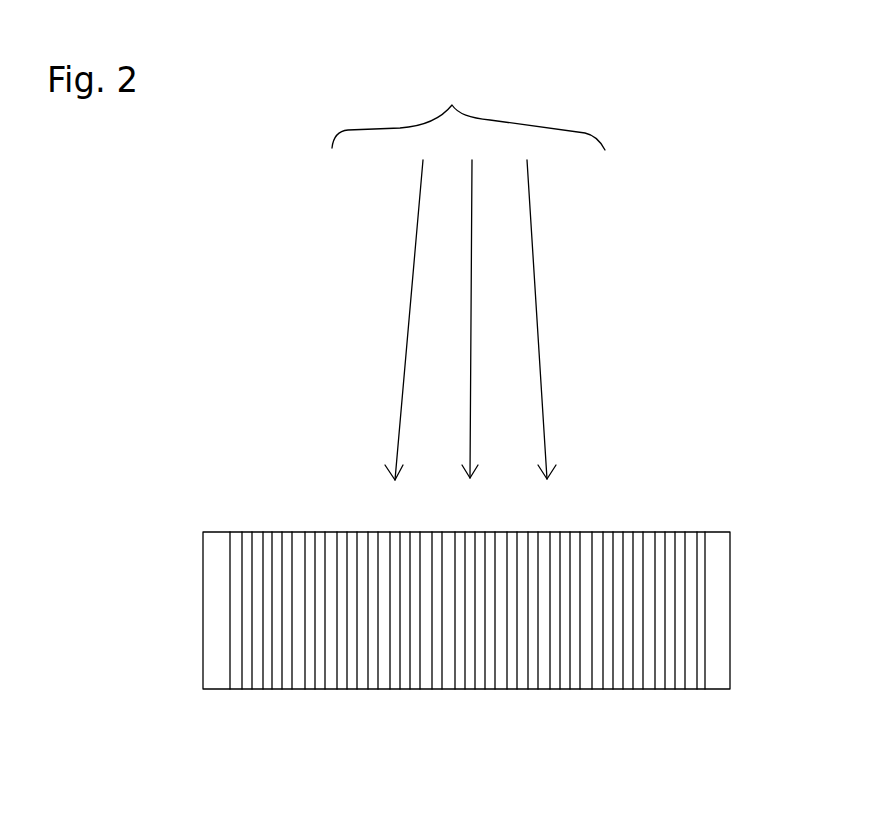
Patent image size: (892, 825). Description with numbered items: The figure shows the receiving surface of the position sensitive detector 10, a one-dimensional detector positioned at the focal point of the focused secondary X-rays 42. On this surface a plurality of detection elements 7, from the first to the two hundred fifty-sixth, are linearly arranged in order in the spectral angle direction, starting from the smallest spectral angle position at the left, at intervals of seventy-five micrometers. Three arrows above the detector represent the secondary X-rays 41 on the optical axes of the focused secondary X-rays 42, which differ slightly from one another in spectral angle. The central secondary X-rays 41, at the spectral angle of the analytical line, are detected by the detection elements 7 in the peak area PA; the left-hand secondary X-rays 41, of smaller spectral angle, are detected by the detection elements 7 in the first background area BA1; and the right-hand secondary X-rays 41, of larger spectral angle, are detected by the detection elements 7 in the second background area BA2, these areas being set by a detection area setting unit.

The focused secondary X-rays 42 is at (468, 107).
The secondary X-rays 41 is at (411, 283).
The position sensitive detector 10 is at (451, 553).
The detection elements 7 is at (229, 617).
The first background area BA1 is at (362, 709).
The peak area PA is at (442, 709).
The second background area BA2 is at (522, 709).